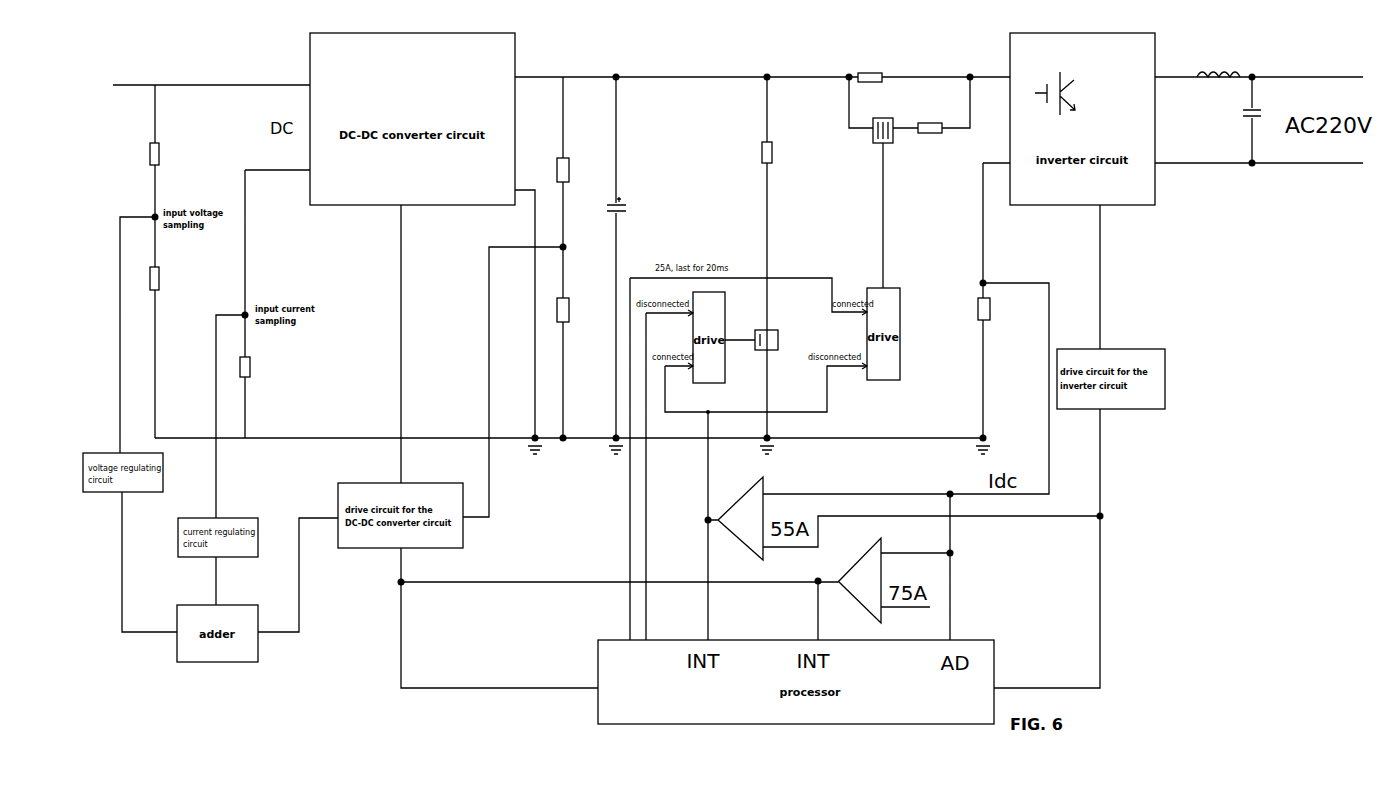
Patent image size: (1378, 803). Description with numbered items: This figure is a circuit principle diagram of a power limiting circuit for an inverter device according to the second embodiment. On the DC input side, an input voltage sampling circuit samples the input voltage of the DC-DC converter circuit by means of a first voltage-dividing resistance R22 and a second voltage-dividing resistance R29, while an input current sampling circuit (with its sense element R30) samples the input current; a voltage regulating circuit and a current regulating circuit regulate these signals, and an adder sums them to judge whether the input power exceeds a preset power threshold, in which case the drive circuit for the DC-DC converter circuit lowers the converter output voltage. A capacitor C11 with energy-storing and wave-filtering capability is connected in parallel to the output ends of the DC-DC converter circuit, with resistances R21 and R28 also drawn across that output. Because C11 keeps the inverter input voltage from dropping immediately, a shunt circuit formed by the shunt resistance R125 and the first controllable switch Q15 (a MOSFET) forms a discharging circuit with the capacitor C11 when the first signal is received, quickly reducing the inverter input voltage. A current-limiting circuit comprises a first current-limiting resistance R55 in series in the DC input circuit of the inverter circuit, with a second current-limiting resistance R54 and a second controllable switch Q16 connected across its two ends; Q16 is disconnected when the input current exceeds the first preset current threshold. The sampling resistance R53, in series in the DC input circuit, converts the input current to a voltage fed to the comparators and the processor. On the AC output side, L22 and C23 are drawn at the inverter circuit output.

The first voltage-dividing resistance R22 is at (186, 154).
The second voltage-dividing resistance R29 is at (164, 278).
The current sampling resistor R30 is at (268, 365).
The resistor R21 is at (572, 170).
The resistor R28 is at (572, 310).
The capacitor C11 is at (642, 214).
The shunt resistance R125 is at (791, 152).
The first current-limiting resistance R55 is at (874, 66).
The second controllable switch Q16 is at (881, 123).
The second current-limiting resistance R54 is at (934, 118).
The first controllable switch Q15 is at (777, 340).
The sampling resistance R53 is at (962, 309).
The output inductor L22 is at (1218, 67).
The output capacitor C23 is at (1240, 114).